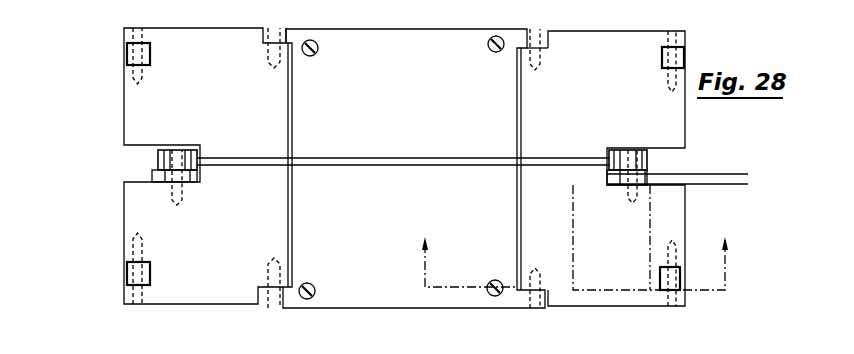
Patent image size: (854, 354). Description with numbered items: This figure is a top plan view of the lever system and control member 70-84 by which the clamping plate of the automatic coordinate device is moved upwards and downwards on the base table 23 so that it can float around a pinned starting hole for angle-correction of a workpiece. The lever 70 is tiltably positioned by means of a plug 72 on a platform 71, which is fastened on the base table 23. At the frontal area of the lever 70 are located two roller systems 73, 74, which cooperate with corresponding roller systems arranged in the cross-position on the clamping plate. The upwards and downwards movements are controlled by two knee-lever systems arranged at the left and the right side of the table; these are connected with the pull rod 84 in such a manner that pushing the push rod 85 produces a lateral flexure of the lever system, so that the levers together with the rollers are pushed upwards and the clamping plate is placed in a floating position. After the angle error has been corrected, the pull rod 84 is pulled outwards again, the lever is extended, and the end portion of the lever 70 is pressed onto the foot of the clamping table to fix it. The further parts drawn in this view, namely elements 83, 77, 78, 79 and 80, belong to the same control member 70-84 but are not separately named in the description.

The lever 70 is at (404, 153).
The platform 71 is at (419, 50).
The base table 23 is at (401, 149).
The plug 72 is at (535, 29).
The roller system 73 is at (680, 46).
The roller system 74 is at (672, 47).
The plate edge 83 is at (634, 7).
The knurled nut 77 is at (158, 154).
The flange 78 is at (152, 172).
The pin 79 is at (157, 180).
The phantom position 80 is at (630, 195).
The pull rod 84 is at (443, 166).
The push rod 85 is at (700, 182).